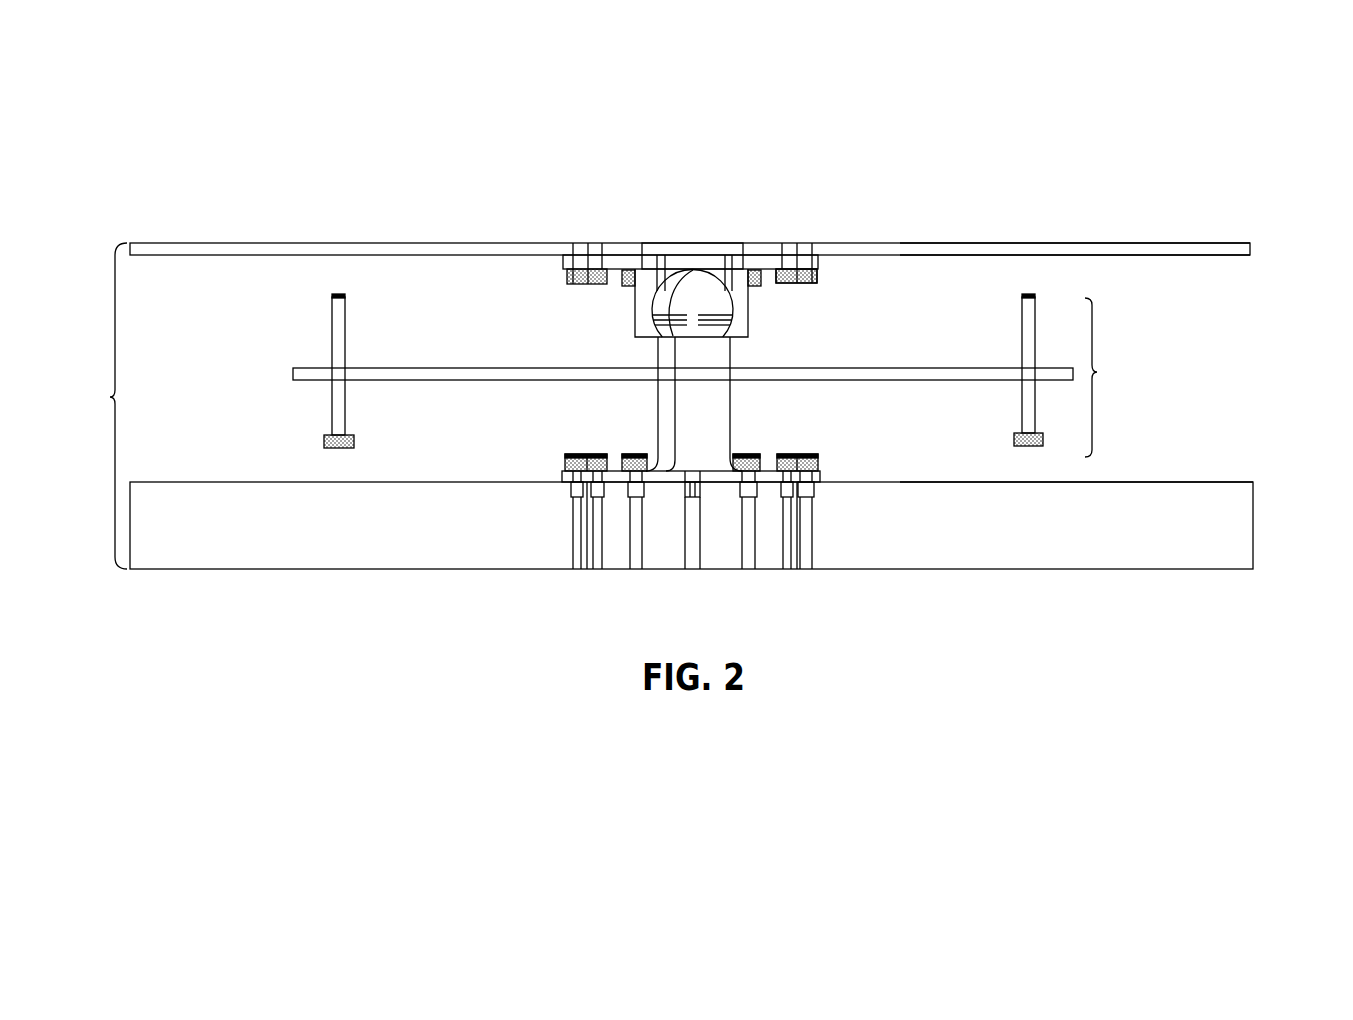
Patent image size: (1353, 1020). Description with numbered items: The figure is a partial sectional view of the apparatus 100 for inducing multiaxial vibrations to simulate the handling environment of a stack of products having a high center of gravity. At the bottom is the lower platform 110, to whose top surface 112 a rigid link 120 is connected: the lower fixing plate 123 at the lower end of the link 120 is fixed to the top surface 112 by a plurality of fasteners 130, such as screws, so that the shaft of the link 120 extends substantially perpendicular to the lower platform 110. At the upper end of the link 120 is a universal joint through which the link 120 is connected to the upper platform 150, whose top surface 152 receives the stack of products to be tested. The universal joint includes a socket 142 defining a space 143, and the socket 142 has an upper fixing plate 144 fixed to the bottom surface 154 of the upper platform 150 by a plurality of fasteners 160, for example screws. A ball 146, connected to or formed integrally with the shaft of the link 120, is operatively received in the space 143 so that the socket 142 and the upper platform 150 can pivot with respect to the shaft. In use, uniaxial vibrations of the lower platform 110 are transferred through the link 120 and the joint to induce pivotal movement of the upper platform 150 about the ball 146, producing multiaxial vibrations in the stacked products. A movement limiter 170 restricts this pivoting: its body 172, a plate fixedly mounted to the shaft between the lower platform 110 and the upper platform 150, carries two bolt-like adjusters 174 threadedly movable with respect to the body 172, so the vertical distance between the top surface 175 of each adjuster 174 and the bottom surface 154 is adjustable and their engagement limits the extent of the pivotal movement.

The apparatus 100 is at (97, 406).
The lower platform 110 is at (362, 546).
The top surface 112 is at (1143, 482).
The link 120 is at (745, 431).
The lower fixing plate 123 is at (562, 477).
The fasteners 130 is at (637, 453).
The socket 142 is at (750, 317).
The space 143 is at (717, 268).
The upper fixing plate 144 is at (763, 262).
The ball 146 is at (652, 305).
The upper platform 150 is at (1250, 248).
The top surface 152 is at (1142, 243).
The bottom surface 154 is at (1162, 257).
The fasteners 160 is at (817, 275).
The movement limiter 170 is at (1117, 377).
The body 172 is at (893, 368).
The adjuster 174 is at (332, 337).
The top surface 175 is at (340, 296).